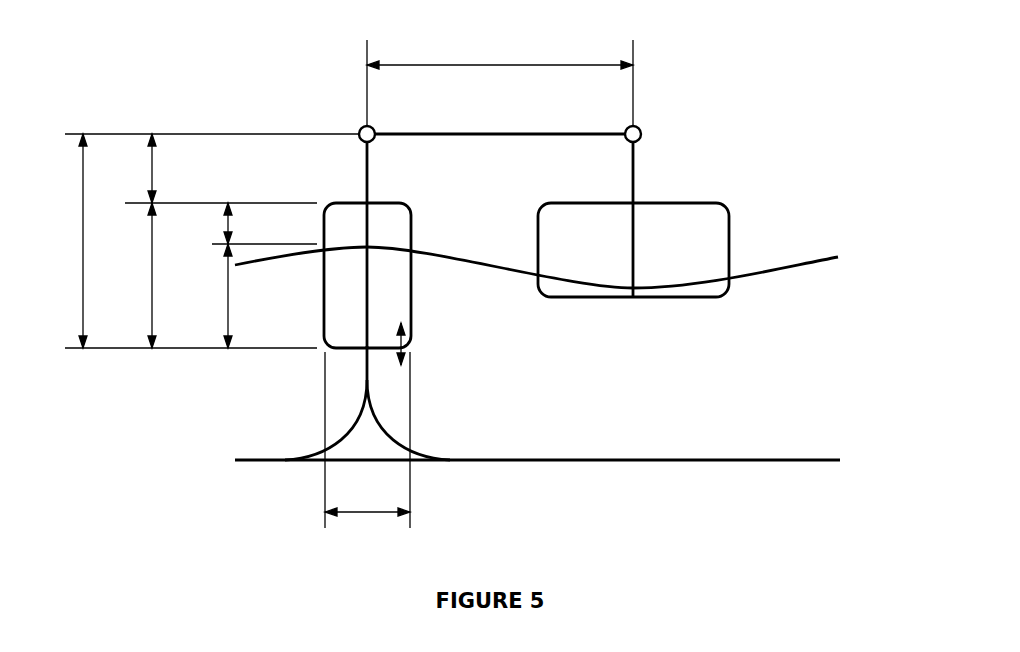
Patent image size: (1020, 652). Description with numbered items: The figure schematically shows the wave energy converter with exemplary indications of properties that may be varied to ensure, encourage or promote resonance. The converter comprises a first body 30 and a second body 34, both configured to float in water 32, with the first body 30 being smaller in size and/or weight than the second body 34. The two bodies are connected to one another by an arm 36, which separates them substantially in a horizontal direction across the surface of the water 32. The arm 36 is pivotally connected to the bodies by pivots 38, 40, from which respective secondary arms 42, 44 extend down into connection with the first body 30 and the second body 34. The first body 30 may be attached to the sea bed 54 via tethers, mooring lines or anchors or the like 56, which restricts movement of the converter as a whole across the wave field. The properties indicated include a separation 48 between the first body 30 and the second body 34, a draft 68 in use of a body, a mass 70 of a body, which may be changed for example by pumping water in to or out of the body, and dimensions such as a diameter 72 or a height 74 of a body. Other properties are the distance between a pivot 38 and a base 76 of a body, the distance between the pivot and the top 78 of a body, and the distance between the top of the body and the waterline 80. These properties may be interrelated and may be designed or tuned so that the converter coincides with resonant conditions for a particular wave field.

The first body 30 is at (402, 262).
The water 32 is at (805, 272).
The second body 34 is at (702, 288).
The arm 36 is at (542, 137).
The pivot 38 is at (359, 128).
The pivot 40 is at (642, 125).
The secondary arm 42 is at (370, 190).
The secondary arm 44 is at (637, 182).
The separation 48 is at (500, 53).
The sea bed 54 is at (632, 469).
The tethers, mooring lines or anchors 56 is at (417, 455).
The draft 68 is at (209, 296).
The mass 70 is at (422, 344).
The diameter 72 is at (367, 527).
The height 74 is at (134, 275).
The base of a body 76 is at (64, 241).
The top of a body 78 is at (134, 168).
The waterline 80 is at (209, 223).